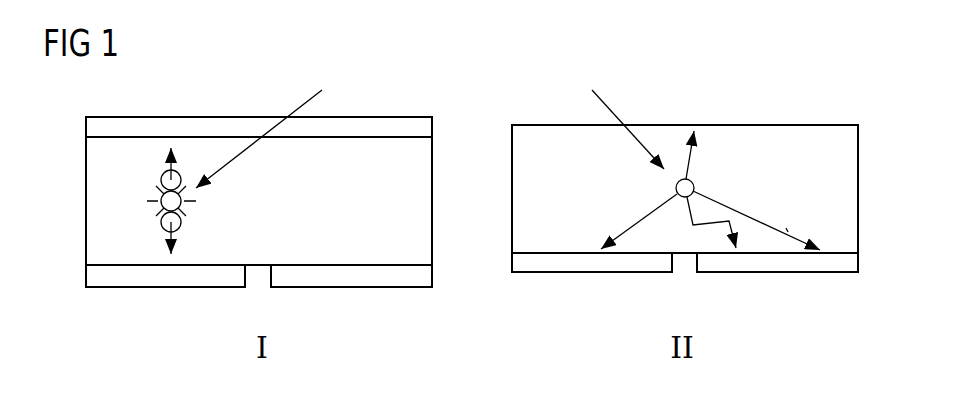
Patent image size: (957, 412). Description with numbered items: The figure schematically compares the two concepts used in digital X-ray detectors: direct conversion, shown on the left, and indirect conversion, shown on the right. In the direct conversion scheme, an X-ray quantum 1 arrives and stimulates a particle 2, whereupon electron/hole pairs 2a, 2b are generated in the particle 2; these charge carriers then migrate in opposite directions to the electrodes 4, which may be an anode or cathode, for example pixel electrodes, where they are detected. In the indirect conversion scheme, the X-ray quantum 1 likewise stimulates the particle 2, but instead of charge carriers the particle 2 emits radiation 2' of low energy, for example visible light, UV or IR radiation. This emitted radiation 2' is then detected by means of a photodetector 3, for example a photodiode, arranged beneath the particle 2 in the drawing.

The X-ray quantum 1 is at (303, 100).
The particle 2 is at (434, 159).
The electron/hole pair 2a is at (162, 178).
The electron/hole pair 2b is at (162, 229).
The radiation 2' is at (810, 150).
The photodetector 3 is at (591, 272).
The electrode 4 is at (360, 127).